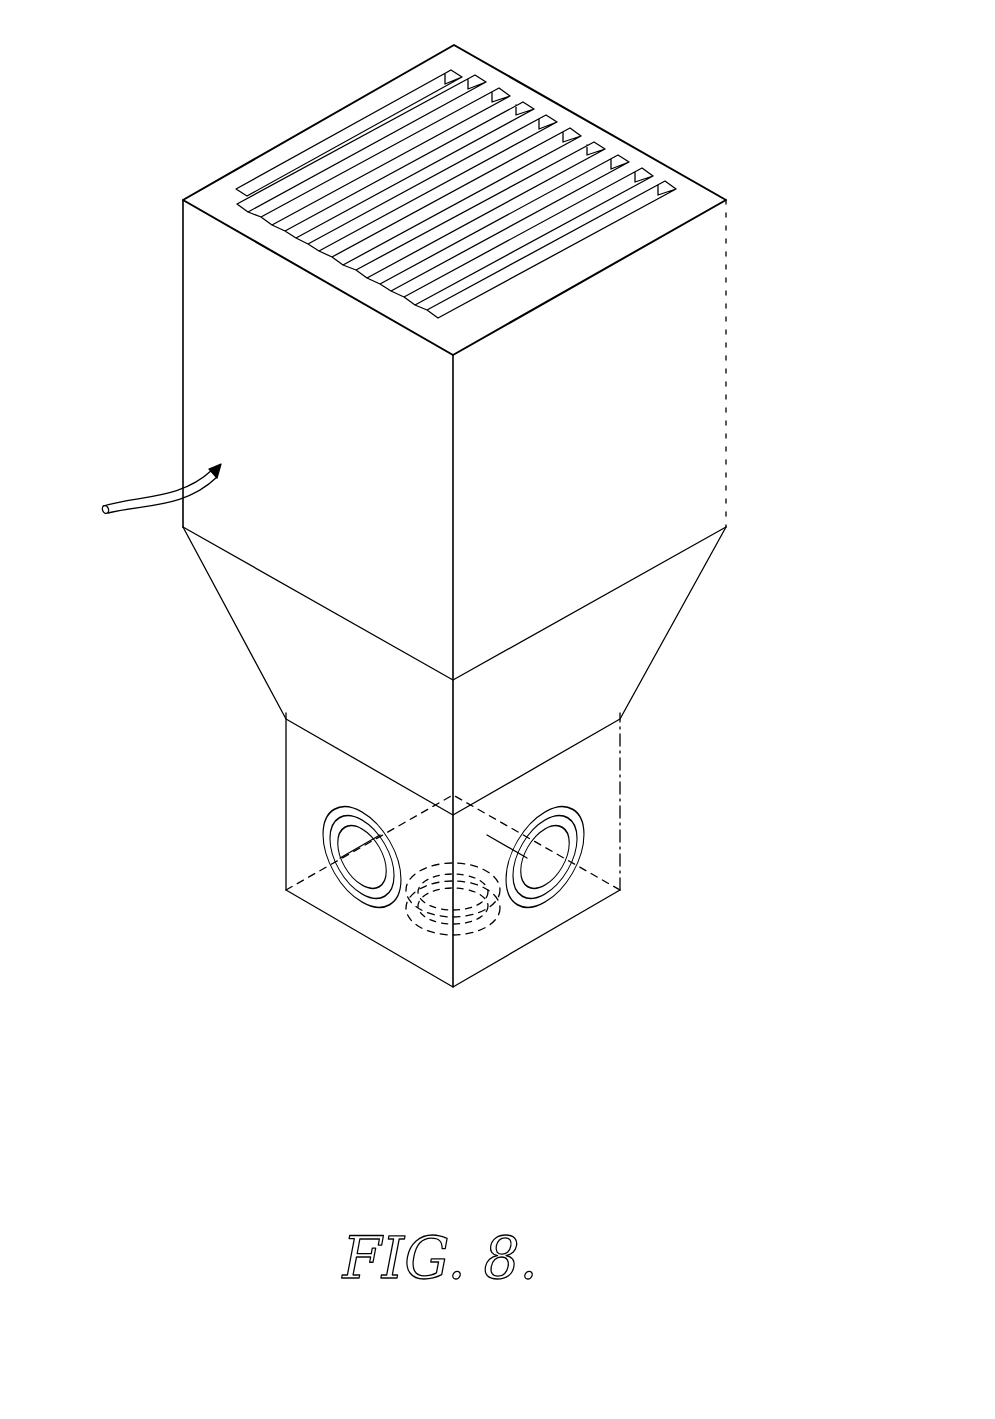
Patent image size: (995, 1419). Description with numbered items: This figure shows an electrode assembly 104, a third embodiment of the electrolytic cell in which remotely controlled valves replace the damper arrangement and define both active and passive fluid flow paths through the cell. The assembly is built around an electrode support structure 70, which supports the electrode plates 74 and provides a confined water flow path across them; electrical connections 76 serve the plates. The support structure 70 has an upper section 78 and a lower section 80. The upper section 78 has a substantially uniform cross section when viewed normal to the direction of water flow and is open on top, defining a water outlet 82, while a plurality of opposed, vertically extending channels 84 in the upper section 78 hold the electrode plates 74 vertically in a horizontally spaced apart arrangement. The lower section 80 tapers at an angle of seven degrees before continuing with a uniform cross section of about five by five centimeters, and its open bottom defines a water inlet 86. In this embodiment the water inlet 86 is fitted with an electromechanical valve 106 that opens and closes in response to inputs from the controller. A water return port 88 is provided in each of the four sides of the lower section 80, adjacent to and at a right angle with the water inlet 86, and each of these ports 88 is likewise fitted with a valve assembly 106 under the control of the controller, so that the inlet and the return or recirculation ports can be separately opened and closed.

The electrode support structure 70 is at (437, 512).
The electrode plates 74 is at (563, 143).
The electrical connections 76 is at (118, 493).
The upper section 78 is at (179, 333).
The lower section 80 is at (227, 619).
The water outlet 82 is at (371, 104).
The vertically extending channels 84 is at (445, 81).
The water inlet 86 is at (393, 920).
The water return port 88 is at (362, 870).
The electrode assembly 104 is at (132, 1076).
The electromechanical valve 106 is at (323, 838).